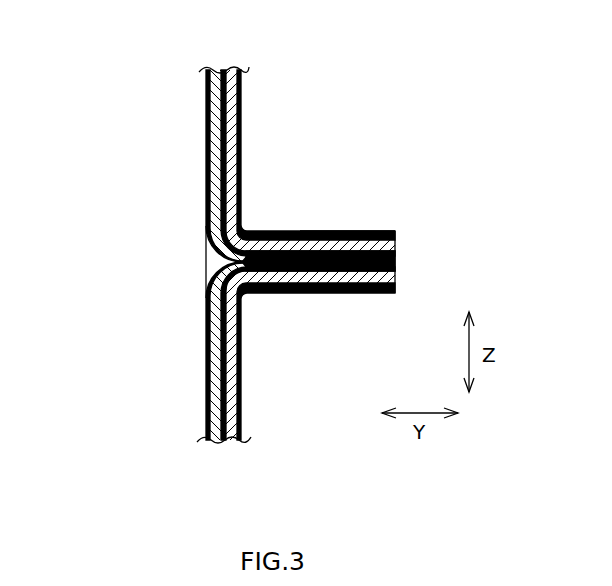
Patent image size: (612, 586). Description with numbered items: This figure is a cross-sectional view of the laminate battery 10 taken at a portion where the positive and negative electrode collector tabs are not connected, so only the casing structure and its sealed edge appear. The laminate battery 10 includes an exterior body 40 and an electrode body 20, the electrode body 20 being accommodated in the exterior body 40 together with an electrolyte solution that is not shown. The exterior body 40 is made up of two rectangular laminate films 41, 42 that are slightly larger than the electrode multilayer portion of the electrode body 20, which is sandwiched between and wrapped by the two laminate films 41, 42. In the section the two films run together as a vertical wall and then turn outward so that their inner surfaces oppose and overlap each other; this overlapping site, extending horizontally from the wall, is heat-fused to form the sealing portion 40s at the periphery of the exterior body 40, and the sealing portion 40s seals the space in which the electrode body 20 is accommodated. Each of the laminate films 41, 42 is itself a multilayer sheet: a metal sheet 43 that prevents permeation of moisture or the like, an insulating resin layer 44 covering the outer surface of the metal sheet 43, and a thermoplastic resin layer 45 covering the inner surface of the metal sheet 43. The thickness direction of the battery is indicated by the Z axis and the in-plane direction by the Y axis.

The laminate battery 10 is at (346, 73).
The electrode body 20 is at (207, 281).
The exterior body 40 is at (332, 132).
The sealing portion 40s is at (373, 228).
The laminate film 41 is at (240, 110).
The laminate film 42 is at (237, 392).
The metal sheet 43 is at (235, 163).
The insulating resin layer 44 is at (238, 136).
The thermoplastic resin layer 45 is at (236, 195).